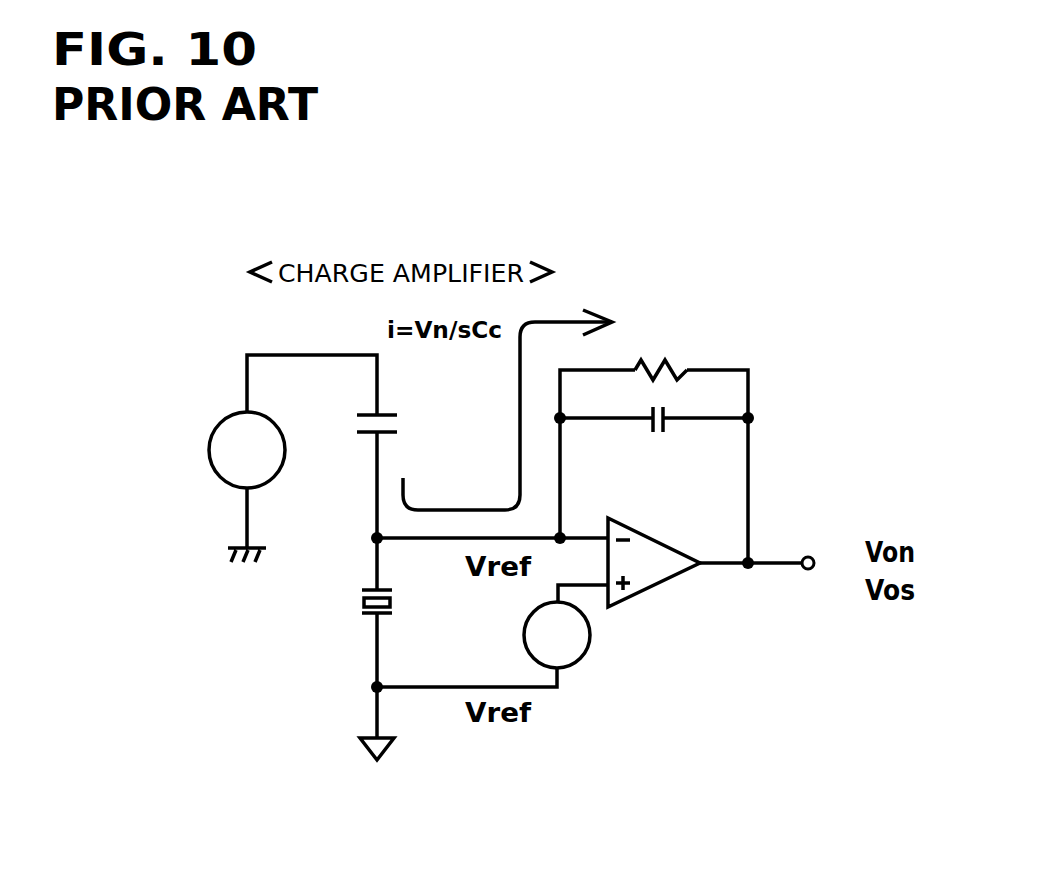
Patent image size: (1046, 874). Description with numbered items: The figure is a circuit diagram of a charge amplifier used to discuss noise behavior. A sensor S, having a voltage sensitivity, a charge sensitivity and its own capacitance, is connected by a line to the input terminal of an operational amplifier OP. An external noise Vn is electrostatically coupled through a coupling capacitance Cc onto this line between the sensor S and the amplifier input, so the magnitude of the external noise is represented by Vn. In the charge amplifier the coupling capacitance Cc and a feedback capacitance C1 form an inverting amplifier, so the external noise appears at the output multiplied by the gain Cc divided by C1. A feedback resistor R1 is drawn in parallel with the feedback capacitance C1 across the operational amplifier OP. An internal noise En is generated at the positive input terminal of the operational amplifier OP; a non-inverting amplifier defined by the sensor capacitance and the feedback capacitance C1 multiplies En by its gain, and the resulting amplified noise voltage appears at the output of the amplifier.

The external noise Vn is at (247, 450).
The coupling capacitance Cc is at (354, 421).
The sensor S is at (349, 606).
The feedback resistor R1 is at (661, 347).
The feedback capacitance C1 is at (654, 436).
The operational amplifier OP is at (654, 562).
The internal noise En is at (557, 635).